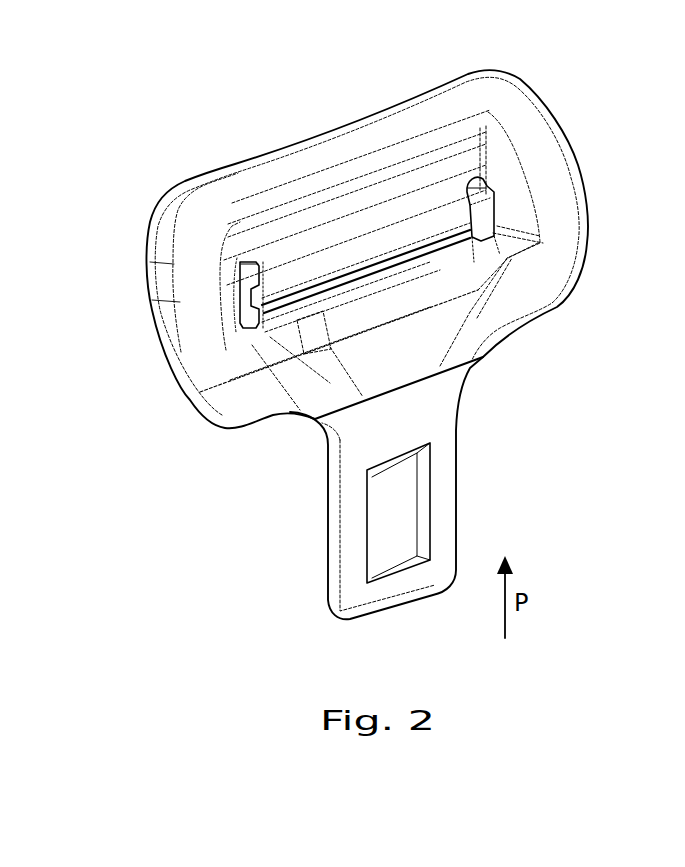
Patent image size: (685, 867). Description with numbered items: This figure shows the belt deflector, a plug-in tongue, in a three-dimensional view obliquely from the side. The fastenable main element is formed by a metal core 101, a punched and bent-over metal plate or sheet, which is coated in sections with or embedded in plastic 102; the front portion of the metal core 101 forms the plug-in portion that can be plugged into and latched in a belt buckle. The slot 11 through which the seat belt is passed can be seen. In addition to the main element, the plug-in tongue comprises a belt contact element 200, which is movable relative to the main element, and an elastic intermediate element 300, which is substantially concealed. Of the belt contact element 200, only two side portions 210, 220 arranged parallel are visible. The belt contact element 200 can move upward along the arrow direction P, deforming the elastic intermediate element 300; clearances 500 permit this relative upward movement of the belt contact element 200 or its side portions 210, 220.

The slot 11 is at (360, 252).
The metal core 101 is at (443, 447).
The plastic 102 is at (588, 238).
The belt contact element 200 is at (247, 316).
The side portion 210 is at (249, 294).
The side portion 220 is at (484, 213).
The elastic intermediate element 300 is at (403, 268).
The clearances 500 is at (241, 270).